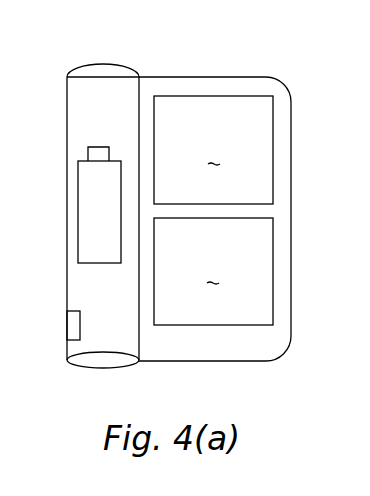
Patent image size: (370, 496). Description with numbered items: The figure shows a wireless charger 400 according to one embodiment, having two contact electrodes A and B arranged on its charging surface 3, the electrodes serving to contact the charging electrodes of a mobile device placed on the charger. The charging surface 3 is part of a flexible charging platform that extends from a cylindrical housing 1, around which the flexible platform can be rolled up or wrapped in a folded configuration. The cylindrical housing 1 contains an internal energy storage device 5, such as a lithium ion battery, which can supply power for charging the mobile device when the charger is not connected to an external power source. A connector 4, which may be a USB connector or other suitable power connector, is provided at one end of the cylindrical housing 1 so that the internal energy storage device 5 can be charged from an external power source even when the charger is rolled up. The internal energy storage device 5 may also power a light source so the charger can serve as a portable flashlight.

The wireless charger 400 is at (279, 49).
The cylindrical housing 1 is at (123, 86).
The charging surface 3 is at (277, 343).
The connector 4 is at (74, 327).
The internal energy storage device 5 is at (92, 198).